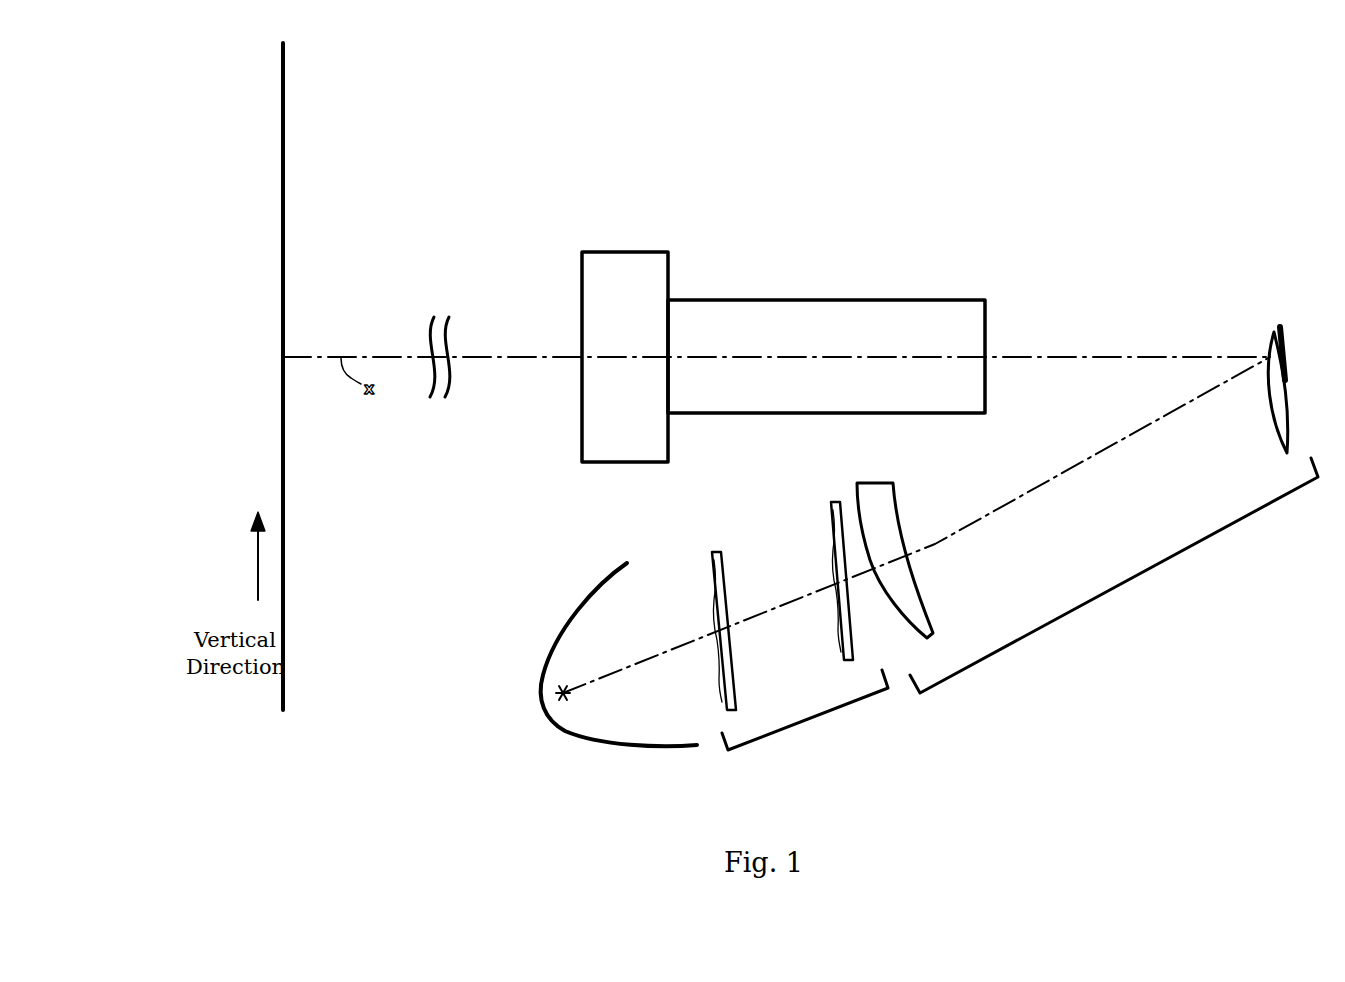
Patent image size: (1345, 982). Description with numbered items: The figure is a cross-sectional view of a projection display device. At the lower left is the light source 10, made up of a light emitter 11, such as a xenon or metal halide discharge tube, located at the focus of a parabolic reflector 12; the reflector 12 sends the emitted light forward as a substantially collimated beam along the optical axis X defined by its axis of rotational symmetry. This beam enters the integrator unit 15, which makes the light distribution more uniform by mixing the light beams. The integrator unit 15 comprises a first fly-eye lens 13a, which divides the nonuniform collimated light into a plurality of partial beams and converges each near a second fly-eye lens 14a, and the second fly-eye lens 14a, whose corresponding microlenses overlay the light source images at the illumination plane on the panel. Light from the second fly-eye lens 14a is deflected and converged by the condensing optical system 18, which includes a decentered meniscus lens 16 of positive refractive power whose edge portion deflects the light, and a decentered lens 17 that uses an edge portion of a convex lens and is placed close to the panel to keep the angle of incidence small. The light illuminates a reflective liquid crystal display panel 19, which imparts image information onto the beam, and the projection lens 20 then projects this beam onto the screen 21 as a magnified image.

The light source 10 is at (573, 593).
The light emitter 11 is at (566, 689).
The parabolic reflector 12 is at (547, 655).
The first fly-eye lens 13a is at (714, 552).
The second fly-eye lens 14a is at (835, 500).
The integrator unit 15 is at (805, 725).
The decentered lens 16 is at (878, 483).
The decentered lens 17 is at (1273, 417).
The condensing optical system 18 is at (1130, 580).
The reflective liquid crystal display panel 19 is at (1298, 320).
The projection lens 20 is at (826, 300).
The screen 21 is at (283, 166).